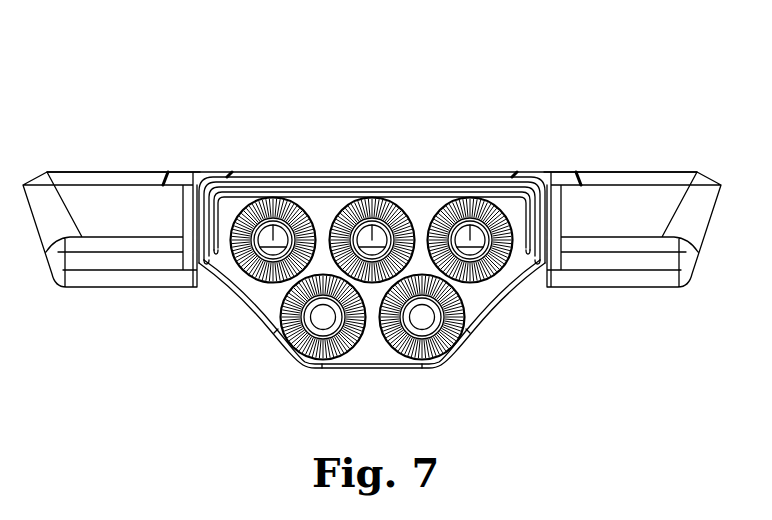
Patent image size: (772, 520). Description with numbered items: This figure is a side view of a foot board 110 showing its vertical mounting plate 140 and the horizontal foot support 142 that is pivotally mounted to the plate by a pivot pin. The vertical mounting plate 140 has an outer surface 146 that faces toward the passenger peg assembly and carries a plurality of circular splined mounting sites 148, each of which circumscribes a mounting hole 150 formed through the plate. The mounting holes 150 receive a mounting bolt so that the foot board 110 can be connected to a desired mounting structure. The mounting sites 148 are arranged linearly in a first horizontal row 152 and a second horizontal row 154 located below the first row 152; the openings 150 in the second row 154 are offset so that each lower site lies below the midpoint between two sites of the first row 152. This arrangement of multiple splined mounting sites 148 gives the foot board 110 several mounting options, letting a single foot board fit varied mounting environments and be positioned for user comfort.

The foot board 110 is at (518, 136).
The vertical mounting plate 140 is at (481, 296).
The horizontal foot support 142 is at (707, 215).
The outer surface 146 is at (222, 272).
The circular splined mounting site 148 is at (452, 203).
The mounting hole 150 is at (273, 240).
The first horizontal row 152 is at (217, 183).
The second horizontal row 154 is at (273, 330).